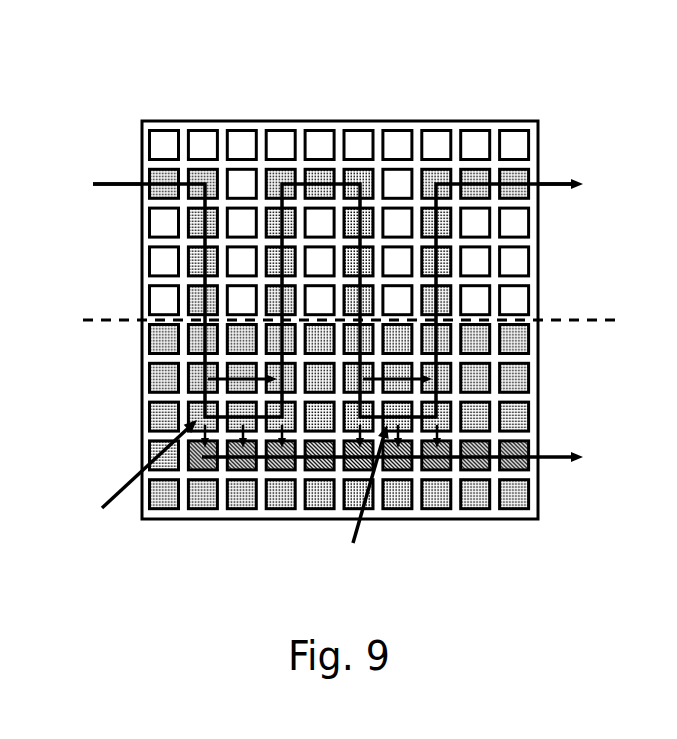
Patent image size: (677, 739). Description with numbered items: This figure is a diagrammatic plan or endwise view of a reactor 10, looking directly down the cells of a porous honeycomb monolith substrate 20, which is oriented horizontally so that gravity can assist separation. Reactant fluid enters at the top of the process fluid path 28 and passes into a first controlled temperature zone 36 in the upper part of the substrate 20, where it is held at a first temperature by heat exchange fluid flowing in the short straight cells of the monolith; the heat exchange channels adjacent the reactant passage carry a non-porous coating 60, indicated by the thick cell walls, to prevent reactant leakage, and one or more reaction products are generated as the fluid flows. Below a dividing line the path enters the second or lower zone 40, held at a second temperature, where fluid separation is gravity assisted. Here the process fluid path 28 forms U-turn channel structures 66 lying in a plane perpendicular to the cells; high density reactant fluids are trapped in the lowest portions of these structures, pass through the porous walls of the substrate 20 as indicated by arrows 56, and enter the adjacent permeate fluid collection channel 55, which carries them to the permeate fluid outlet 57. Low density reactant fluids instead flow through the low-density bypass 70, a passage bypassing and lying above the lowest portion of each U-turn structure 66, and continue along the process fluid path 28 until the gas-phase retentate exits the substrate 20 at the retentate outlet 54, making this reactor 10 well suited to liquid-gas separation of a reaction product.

The reactor 10 is at (285, 576).
The porous substrate 20 is at (137, 143).
The process fluid path 28 is at (90, 204).
The first controlled temperature zone 36 is at (477, 145).
The second zone 40 is at (440, 497).
The retentate outlet 54 is at (598, 186).
The permeate fluid collection channel 55 is at (248, 463).
The arrows indicating permeate flow 56 is at (450, 435).
The permeate fluid outlet 57 is at (595, 464).
The non-porous coating 60 is at (172, 299).
The U-turn channel structures 66 is at (233, 495).
The low-density bypass 70 is at (231, 386).